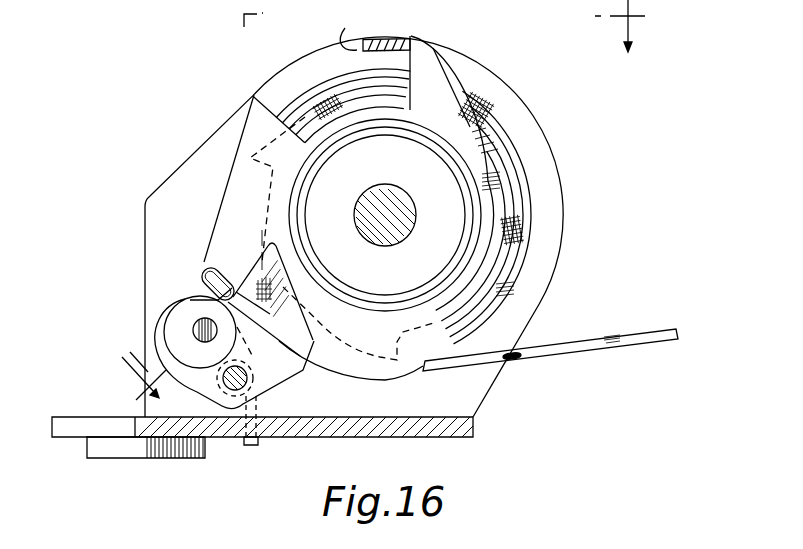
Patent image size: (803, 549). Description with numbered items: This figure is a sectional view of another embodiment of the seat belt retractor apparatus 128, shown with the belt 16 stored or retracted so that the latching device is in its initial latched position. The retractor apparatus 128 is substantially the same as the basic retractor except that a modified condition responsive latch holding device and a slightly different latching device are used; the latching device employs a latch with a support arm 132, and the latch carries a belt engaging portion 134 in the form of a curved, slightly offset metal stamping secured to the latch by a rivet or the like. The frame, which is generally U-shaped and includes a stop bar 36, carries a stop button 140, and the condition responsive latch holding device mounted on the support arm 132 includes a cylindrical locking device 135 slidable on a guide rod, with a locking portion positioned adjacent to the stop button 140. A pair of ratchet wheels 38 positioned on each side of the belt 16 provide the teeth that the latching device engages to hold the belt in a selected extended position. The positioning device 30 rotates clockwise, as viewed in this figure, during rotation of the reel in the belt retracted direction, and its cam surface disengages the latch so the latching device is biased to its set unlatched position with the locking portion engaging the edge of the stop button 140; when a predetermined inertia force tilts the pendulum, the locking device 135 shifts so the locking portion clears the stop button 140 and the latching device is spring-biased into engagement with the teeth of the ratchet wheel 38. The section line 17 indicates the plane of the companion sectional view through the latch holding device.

The outboard belt 16 is at (594, 344).
The section line 17- 17 is at (364, 205).
The positioning device 30 is at (490, 212).
The stop bar 36 is at (367, 30).
The ratchet wheels 38 is at (506, 142).
The retractor apparatus 128 is at (469, 59).
The support arm 132 is at (232, 390).
The belt engaging portion 134 is at (214, 262).
The locking device 135 is at (185, 388).
The stop button 140 is at (185, 333).